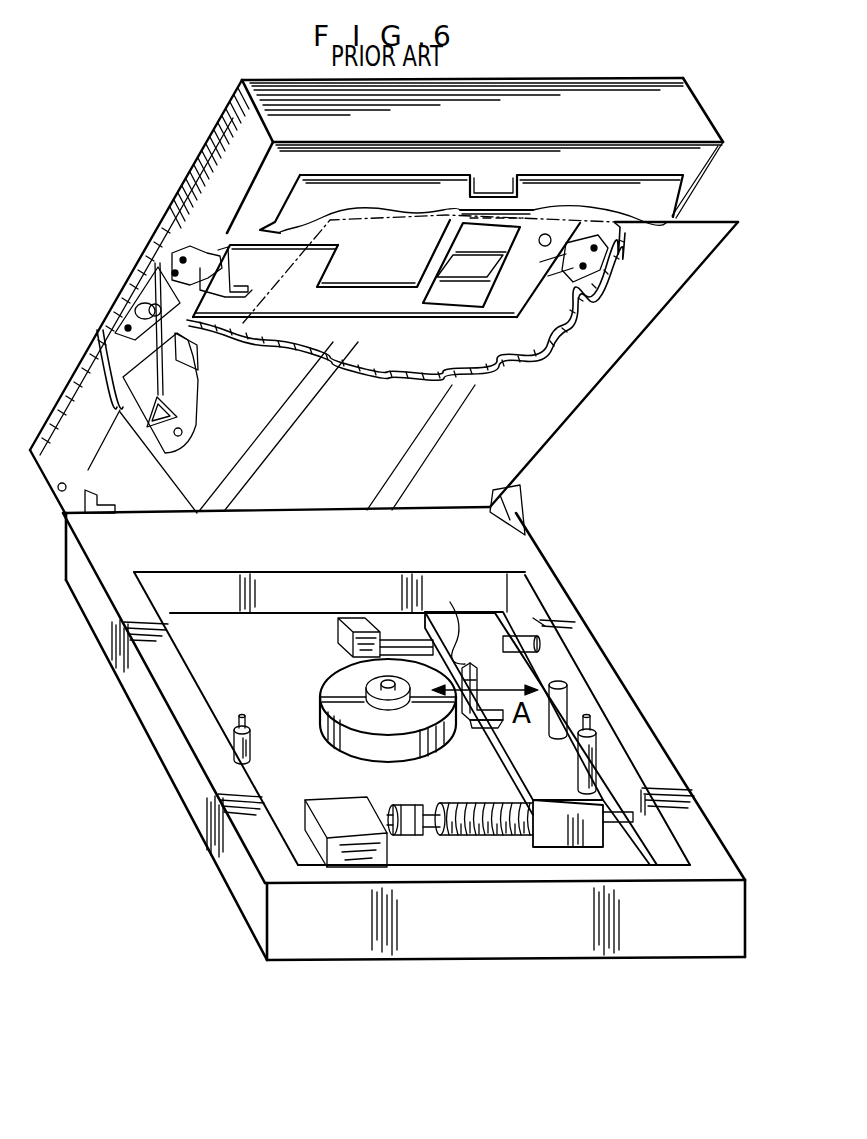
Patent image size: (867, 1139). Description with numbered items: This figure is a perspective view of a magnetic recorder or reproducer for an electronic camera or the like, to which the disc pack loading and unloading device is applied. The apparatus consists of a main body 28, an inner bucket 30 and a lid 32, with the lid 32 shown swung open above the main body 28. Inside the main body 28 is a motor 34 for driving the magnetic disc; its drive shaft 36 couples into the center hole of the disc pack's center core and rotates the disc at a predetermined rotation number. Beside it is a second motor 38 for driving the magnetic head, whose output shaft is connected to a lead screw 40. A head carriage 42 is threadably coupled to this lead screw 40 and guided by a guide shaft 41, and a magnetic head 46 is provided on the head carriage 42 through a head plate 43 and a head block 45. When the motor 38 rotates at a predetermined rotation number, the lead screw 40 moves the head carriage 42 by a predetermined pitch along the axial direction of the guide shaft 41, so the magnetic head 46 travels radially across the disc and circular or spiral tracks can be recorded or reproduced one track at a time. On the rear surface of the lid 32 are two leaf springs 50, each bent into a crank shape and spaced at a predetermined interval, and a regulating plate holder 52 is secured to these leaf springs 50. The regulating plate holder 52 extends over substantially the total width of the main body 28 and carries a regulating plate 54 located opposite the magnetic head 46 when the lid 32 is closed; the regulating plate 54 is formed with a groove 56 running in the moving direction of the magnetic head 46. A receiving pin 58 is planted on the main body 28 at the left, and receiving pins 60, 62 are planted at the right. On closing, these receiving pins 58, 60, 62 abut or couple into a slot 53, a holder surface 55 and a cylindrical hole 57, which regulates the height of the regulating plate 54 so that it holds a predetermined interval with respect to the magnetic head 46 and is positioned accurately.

The main body 28 is at (163, 768).
The inner bucket 30 is at (107, 452).
The lid 32 is at (222, 197).
The motor 34 is at (340, 687).
The drive shaft 36 is at (383, 680).
The motor 38 is at (323, 803).
The lead screw 40 is at (463, 807).
The guide shaft 41 is at (492, 612).
The head carriage 42 is at (556, 806).
The head plate 43 is at (476, 673).
The head block 45 is at (487, 722).
The magnetic head 46 is at (449, 619).
The leaf springs 50 is at (190, 272).
The regulating plate holder 52 is at (398, 303).
The slot 53 is at (222, 293).
The regulating plate 54 is at (473, 295).
The holder surface 55 is at (556, 327).
The groove 56 is at (428, 278).
The cylindrical hole 57 is at (546, 247).
The receiving pin 58 is at (248, 750).
The receiving pin 60 is at (566, 693).
The receiving pin 62 is at (590, 733).